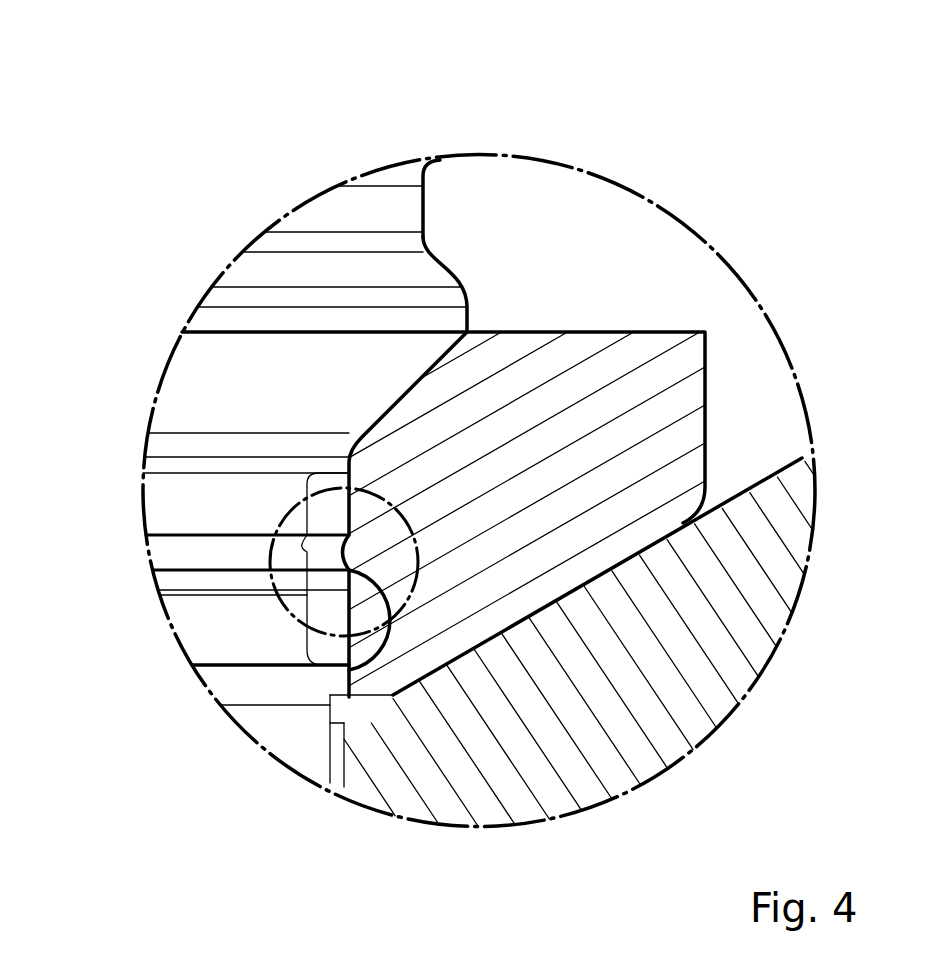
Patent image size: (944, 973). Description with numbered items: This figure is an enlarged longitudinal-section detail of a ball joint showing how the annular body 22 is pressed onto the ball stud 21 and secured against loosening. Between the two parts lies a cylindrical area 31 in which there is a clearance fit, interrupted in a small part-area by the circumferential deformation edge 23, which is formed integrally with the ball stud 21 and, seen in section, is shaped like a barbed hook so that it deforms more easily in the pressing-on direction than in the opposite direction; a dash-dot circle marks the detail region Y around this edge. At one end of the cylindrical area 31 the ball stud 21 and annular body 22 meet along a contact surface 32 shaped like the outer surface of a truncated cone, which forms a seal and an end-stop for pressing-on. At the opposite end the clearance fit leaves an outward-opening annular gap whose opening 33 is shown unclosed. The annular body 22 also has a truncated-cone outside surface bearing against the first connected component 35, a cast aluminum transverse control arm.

The ball stud 21 is at (402, 218).
The annular body 22 is at (686, 350).
The deformation edge 23 is at (350, 666).
The cylindrical area 31 is at (300, 549).
The contact surface 32 is at (440, 358).
The opening 33 is at (344, 683).
The first connected component 35 is at (553, 795).
The detail region Y is at (297, 503).